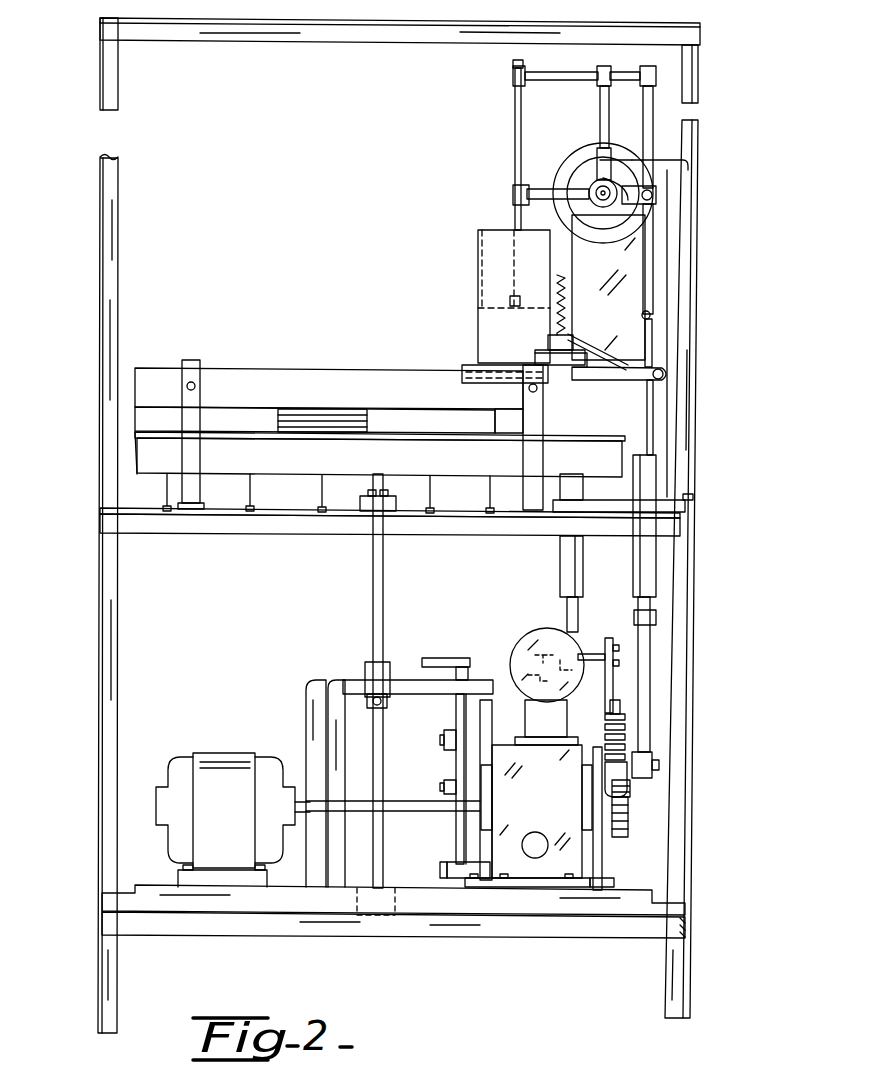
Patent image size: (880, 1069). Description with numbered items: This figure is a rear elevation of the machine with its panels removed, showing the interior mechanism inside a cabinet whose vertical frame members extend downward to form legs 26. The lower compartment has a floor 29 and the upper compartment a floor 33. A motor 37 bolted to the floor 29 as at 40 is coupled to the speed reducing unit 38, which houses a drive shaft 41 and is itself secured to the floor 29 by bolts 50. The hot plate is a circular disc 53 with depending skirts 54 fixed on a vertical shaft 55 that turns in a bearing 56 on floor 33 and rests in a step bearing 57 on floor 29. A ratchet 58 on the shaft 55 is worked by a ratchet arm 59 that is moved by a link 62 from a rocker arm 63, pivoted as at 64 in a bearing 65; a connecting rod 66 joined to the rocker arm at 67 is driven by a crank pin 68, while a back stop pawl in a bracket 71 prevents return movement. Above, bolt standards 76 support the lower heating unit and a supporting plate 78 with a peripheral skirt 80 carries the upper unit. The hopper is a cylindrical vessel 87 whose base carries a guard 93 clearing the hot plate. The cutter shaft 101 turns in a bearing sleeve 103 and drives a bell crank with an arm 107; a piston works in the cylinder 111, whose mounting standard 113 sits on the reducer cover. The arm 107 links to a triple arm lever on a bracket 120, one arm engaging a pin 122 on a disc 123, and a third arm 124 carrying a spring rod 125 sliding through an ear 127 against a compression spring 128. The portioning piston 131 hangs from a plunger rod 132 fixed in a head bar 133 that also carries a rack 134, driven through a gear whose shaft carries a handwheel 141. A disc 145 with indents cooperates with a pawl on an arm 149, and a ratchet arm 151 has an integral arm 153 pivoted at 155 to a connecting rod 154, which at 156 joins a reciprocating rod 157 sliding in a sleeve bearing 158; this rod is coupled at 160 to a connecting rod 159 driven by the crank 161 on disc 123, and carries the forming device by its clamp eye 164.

The legs 26 is at (112, 1008).
The floor 29 is at (272, 905).
The floor 33 is at (225, 517).
The motor 37 is at (236, 816).
The speed reducing unit 38 is at (563, 786).
The bolts 40 is at (188, 882).
The drive shaft 41 is at (438, 812).
The bolts 50 is at (570, 888).
The circular disc 53 is at (135, 433).
The depending skirts 54 is at (380, 454).
The vertical shaft 55 is at (383, 596).
The bearing 56 is at (374, 500).
The step bearing 57 is at (394, 930).
The ratchet 58 is at (360, 684).
The ratchet arm 59 is at (395, 664).
The link 62 is at (445, 660).
The rocker arm 63 is at (445, 860).
The pivot 64 is at (450, 868).
The bearing 65 is at (527, 897).
The connecting rod 66 is at (456, 764).
The pivotal connection 67 is at (444, 738).
The crank pin 68 is at (444, 790).
The bracket 71 is at (310, 712).
The bolt standards 76 is at (250, 490).
The supporting plate 78 is at (225, 368).
The peripheral skirt 80 is at (329, 400).
The cylindrical vessel 87 is at (478, 260).
The guard 93 is at (495, 416).
The shaft 101 is at (570, 605).
The bearing sleeve 103 is at (578, 555).
The arm 107 is at (598, 655).
The cylinder 111 is at (538, 632).
The mounting standard 113 is at (546, 722).
The bracket 120 is at (598, 872).
The pin 122 is at (630, 800).
The disc 123 is at (630, 822).
The third arm 124 is at (622, 788).
The spring rod 125 is at (620, 715).
The ear 127 is at (636, 776).
The compression spring 128 is at (620, 735).
The piston 131 is at (480, 306).
The plunger rod 132 is at (515, 140).
The head bar 133 is at (548, 76).
The rack 134 is at (655, 105).
The handwheel 141 is at (585, 158).
The disc 145 is at (650, 246).
The arm 149 is at (560, 190).
The ratchet arm 151 is at (540, 198).
The arm 153 is at (645, 185).
The connecting rod 154 is at (653, 228).
The pivot 155 is at (658, 196).
The pivot 156 is at (655, 308).
The reciprocating rod 157 is at (652, 338).
The sleeve bearing 158 is at (657, 470).
The connecting rod 159 is at (648, 692).
The pivot 160 is at (657, 618).
The crank 161 is at (660, 765).
The clamp eye 164 is at (668, 370).